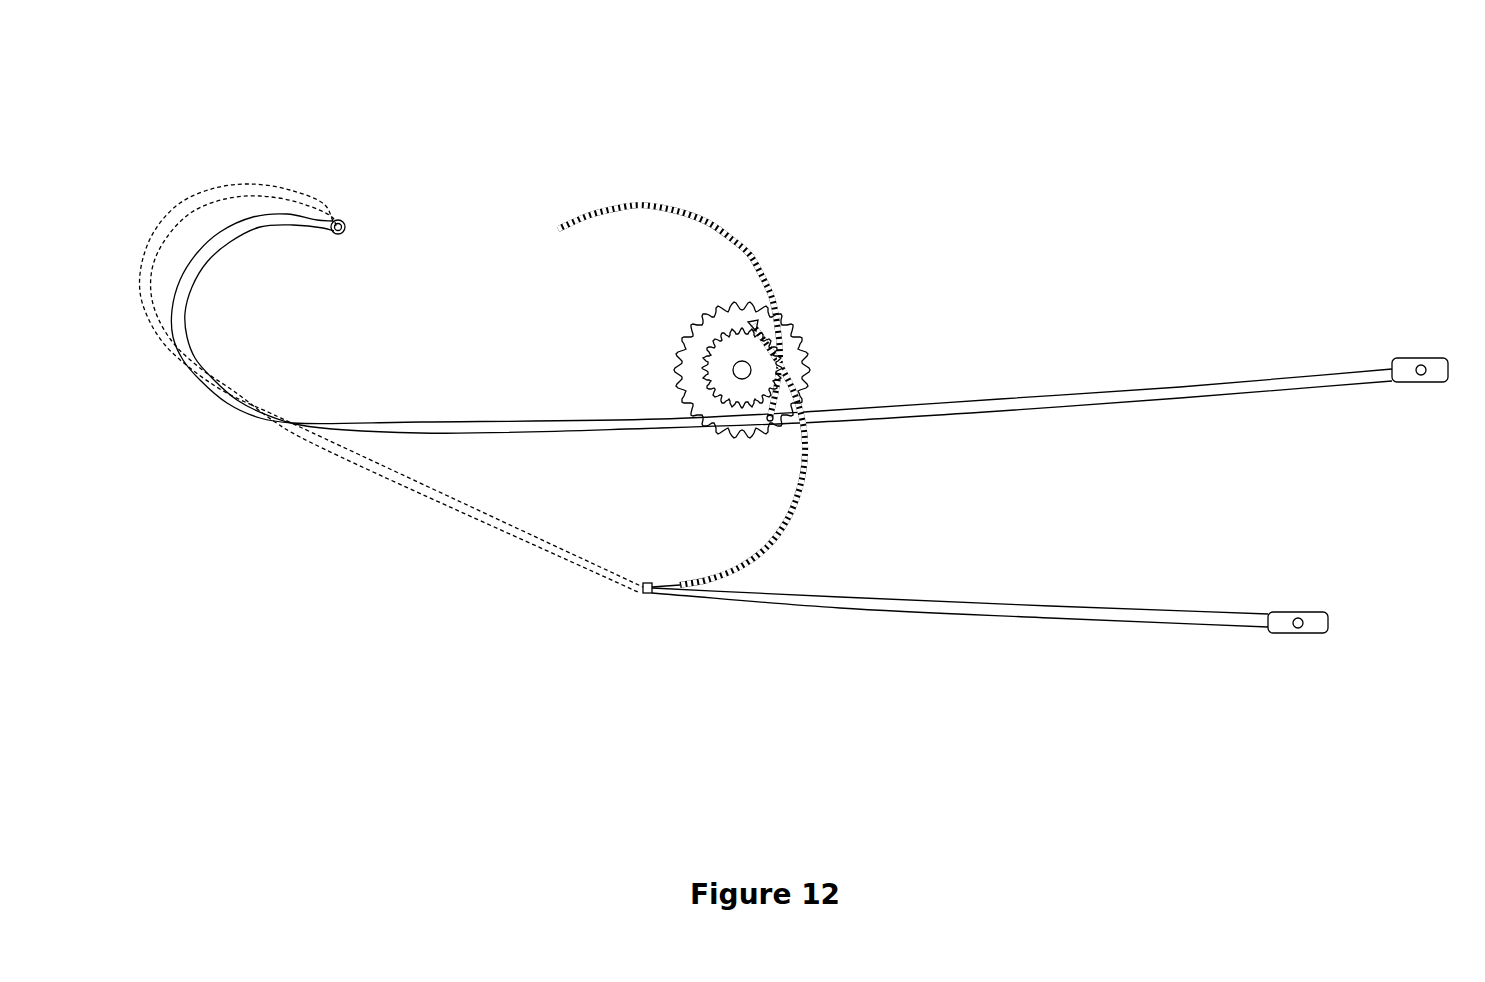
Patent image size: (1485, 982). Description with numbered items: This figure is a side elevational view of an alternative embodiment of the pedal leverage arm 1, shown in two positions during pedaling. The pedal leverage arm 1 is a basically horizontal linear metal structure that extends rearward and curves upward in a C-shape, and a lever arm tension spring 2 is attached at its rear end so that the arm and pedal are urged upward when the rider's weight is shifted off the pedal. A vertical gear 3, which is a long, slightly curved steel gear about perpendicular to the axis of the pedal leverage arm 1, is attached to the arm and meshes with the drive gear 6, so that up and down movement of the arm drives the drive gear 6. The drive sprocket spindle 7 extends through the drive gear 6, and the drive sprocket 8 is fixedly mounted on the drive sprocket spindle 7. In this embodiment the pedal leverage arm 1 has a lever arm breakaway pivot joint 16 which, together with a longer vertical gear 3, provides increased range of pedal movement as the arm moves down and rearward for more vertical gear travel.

The pedal leverage arm 1 is at (608, 422).
The lever arm tension spring 2 is at (350, 232).
The vertical gear 3 is at (750, 252).
The drive gear 6 is at (727, 352).
The drive sprocket spindle 7 is at (733, 370).
The drive sprocket 8 is at (806, 353).
The lever arm breakaway pivot joint 16 is at (650, 598).